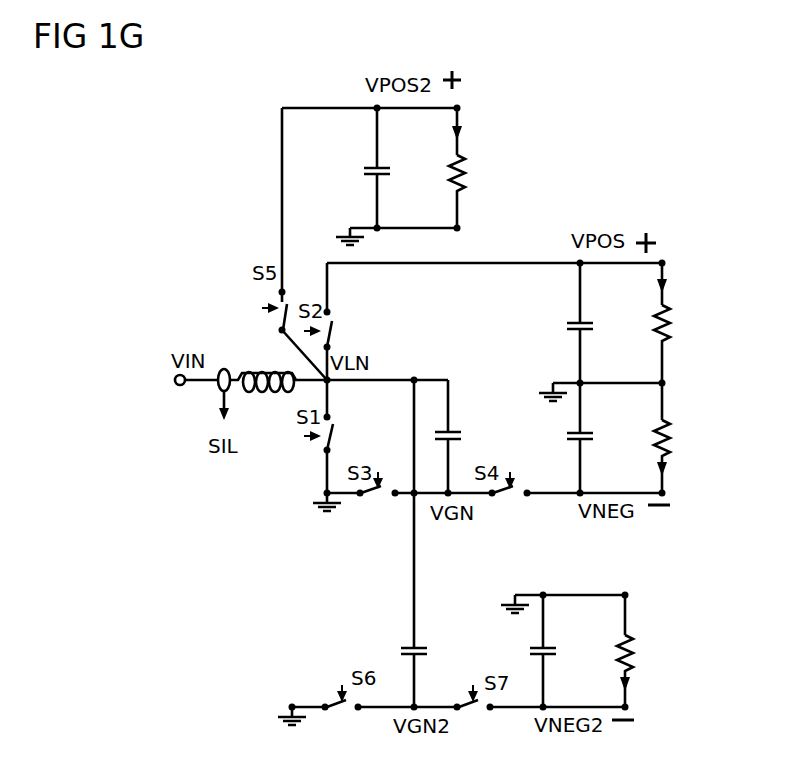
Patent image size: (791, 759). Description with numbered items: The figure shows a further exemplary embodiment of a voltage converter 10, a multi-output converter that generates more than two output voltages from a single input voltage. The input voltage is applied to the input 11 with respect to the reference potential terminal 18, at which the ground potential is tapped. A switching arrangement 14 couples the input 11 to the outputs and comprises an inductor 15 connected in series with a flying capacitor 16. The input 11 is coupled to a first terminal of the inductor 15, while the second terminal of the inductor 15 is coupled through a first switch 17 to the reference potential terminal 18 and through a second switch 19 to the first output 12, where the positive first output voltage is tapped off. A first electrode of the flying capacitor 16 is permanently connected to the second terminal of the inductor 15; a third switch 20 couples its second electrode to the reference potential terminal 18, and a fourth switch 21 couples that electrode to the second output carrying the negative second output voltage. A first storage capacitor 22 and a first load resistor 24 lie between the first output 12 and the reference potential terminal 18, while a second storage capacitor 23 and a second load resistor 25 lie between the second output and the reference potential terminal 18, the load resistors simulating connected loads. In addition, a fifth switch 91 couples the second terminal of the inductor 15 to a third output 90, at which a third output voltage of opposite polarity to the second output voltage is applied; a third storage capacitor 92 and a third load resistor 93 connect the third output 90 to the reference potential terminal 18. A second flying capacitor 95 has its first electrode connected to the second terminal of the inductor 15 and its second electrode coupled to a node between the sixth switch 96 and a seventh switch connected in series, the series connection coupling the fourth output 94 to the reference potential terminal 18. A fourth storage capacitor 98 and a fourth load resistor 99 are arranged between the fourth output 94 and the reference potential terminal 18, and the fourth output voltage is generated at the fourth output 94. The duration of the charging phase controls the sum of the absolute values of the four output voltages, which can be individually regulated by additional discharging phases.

The voltage converter 10 is at (157, 210).
The input 11 is at (178, 387).
The first output 12 is at (665, 262).
The switching arrangement 14 is at (237, 258).
The inductor 15 is at (265, 393).
The flying capacitor 16 is at (440, 436).
The first switch 17 is at (338, 438).
The reference potential terminal 18 is at (356, 234).
The second switch 19 is at (339, 338).
The third switch 20 is at (386, 500).
The fourth switch 21 is at (517, 500).
The first storage capacitor 22 is at (574, 332).
The second storage capacitor 23 is at (573, 442).
The first load resistor 24 is at (670, 325).
The second load resistor 25 is at (670, 440).
The third output 90 is at (460, 108).
The fifth switch 91 is at (272, 315).
The third storage capacitor 92 is at (370, 168).
The third load resistor 93 is at (463, 170).
The fourth output 94 is at (628, 706).
The second flying capacitor 95 is at (407, 642).
The sixth switch 96 is at (346, 713).
The fourth storage capacitor 98 is at (534, 655).
The fourth load resistor 99 is at (631, 652).